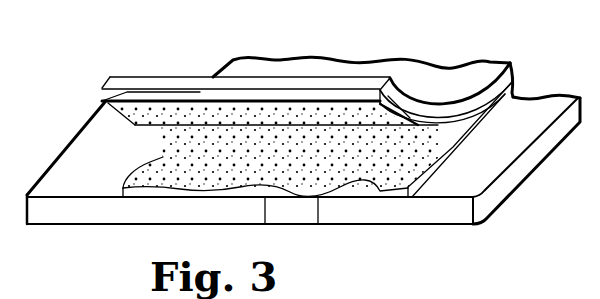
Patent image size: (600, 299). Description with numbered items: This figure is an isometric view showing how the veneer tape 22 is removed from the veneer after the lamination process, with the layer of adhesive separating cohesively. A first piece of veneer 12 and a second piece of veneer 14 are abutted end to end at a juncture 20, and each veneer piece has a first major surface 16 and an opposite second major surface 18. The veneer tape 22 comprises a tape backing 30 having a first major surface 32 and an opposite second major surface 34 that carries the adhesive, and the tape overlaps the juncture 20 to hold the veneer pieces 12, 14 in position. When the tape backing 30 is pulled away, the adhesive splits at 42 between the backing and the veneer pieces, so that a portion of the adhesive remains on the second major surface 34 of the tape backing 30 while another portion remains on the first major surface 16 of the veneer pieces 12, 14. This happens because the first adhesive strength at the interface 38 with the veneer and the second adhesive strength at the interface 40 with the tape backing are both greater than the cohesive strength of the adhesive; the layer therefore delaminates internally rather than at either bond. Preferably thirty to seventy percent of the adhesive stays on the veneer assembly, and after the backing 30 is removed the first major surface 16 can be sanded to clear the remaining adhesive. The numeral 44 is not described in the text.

The first piece of veneer 12 is at (115, 212).
The second piece of veneer 14 is at (385, 220).
The first major surface 16 is at (541, 110).
The second major surface 18 is at (345, 226).
The juncture 20 is at (265, 208).
The veneer tape 22 is at (433, 56).
The tape backing 30 is at (173, 85).
The first major surface 32 is at (477, 72).
The second major surface 34 is at (100, 101).
The interface 38 is at (239, 90).
The interface 40 is at (318, 200).
The internal delamination 42 is at (163, 160).
The second layer 44 is at (318, 87).